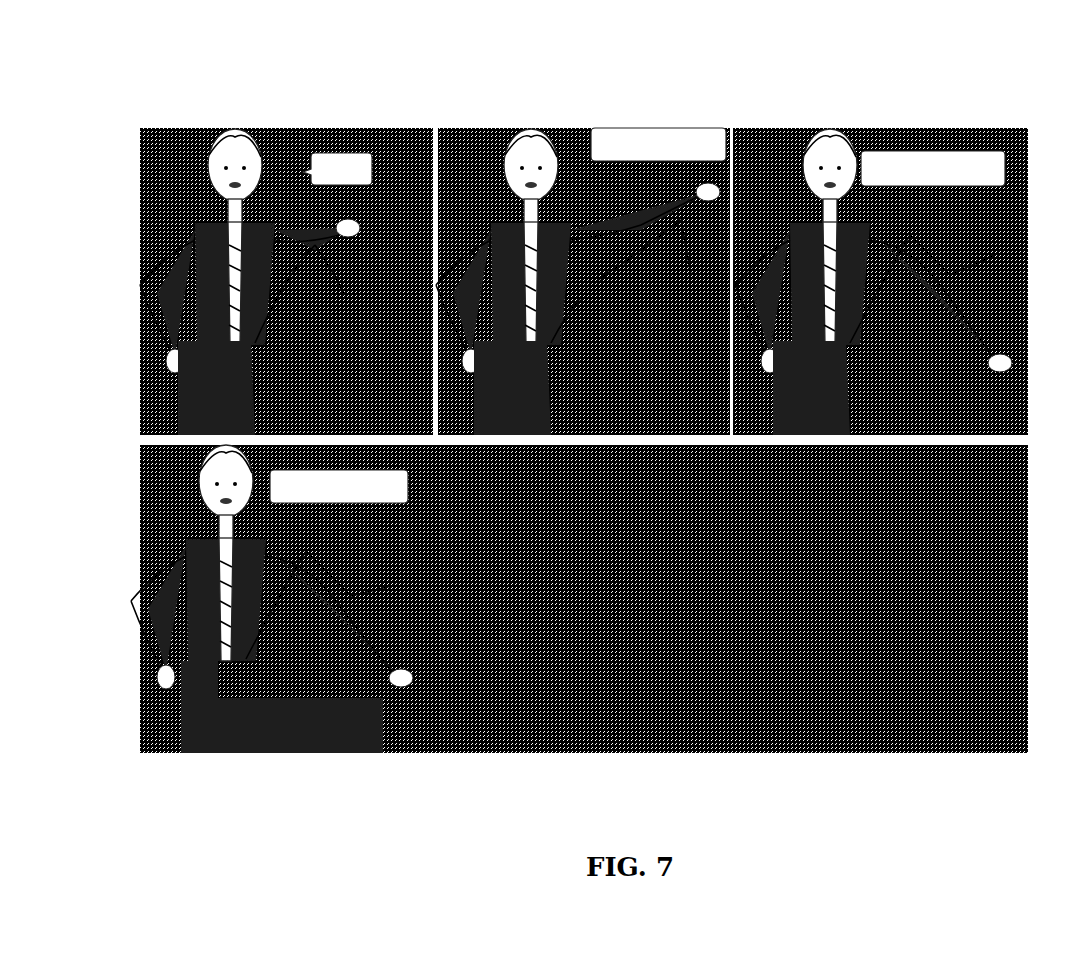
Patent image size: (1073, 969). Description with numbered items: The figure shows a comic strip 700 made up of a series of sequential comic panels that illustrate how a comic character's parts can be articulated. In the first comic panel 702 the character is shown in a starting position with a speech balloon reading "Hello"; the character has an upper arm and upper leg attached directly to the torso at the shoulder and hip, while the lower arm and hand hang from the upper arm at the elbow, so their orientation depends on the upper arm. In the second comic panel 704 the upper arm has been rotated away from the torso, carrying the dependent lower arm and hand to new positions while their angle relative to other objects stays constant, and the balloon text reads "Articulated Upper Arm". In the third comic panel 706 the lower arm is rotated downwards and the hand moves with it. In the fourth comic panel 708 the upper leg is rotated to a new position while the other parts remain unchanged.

The comic strip 700 is at (268, 58).
The first comic panel 702 is at (153, 120).
The second comic panel 704 is at (461, 120).
The third comic panel 706 is at (759, 120).
The fourth comic panel 708 is at (143, 745).